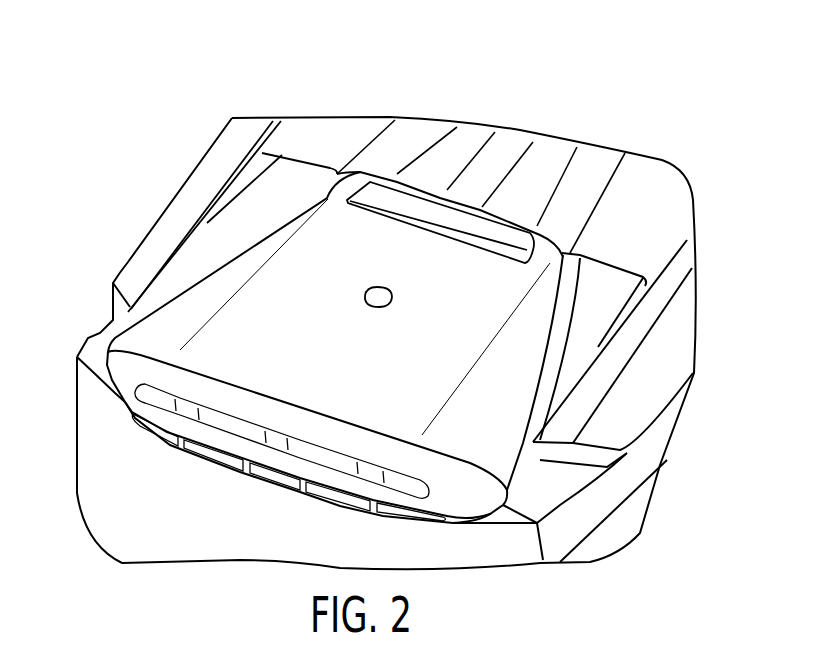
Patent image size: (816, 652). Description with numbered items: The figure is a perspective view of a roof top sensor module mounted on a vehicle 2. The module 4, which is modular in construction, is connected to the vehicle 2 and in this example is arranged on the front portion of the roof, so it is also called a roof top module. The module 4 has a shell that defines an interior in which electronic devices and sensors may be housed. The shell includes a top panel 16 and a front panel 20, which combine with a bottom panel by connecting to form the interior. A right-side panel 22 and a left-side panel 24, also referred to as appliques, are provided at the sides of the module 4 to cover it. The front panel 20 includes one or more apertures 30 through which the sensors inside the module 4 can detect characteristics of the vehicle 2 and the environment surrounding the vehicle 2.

The vehicle 2 is at (98, 208).
The module 4 is at (292, 97).
The top panel 16 is at (205, 297).
The front panel 20 is at (118, 373).
The right-side panel 22 is at (588, 306).
The left-side panel 24 is at (228, 195).
The apertures 30 is at (170, 430).